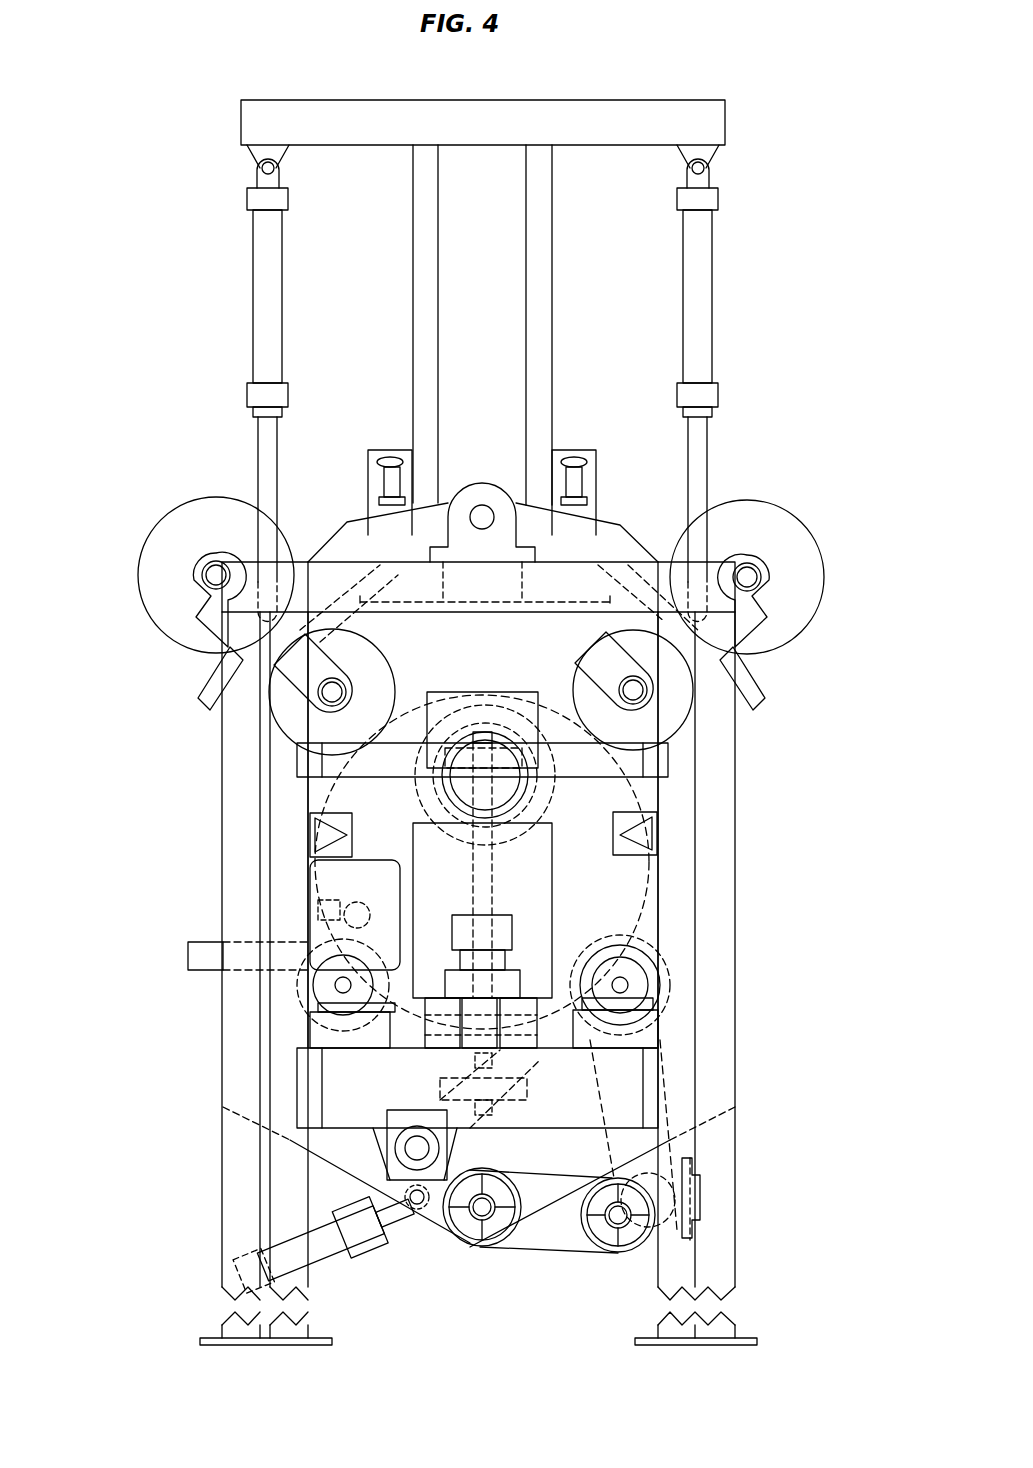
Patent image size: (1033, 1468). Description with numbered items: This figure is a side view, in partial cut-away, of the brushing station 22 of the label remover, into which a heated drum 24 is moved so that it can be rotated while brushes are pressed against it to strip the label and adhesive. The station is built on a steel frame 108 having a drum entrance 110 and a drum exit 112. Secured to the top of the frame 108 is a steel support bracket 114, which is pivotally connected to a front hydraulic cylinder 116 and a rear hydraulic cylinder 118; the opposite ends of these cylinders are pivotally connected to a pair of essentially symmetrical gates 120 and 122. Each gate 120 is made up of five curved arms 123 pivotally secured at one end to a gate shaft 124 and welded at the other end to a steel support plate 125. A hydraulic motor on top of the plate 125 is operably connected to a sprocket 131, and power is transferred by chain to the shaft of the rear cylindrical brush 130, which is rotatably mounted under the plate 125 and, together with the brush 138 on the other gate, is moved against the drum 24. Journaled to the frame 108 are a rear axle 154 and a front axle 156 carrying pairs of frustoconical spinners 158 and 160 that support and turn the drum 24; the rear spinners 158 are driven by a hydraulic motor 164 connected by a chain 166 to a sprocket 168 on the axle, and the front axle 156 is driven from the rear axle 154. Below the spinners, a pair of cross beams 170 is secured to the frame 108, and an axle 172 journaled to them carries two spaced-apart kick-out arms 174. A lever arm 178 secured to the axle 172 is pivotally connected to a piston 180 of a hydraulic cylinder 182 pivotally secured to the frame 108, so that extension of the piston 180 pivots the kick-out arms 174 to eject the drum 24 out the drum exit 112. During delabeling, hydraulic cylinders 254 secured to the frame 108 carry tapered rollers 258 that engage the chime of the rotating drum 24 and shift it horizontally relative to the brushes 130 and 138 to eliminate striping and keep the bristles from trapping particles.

The brushing station 22 is at (242, 48).
The drum 24 is at (638, 885).
The steel frame 108 is at (233, 825).
The drum entrance 110 is at (767, 893).
The drum exit 112 is at (113, 858).
The steel support bracket 114 is at (718, 118).
The front hydraulic cylinder 116 is at (262, 228).
The rear hydraulic cylinder 118 is at (700, 290).
The rear gate 120 is at (778, 716).
The front gate 122 is at (193, 716).
The curved arms 123 is at (752, 670).
The gate shaft 124 is at (482, 515).
The steel support plate 125 is at (745, 706).
The rear cylindrical brush 130 is at (582, 668).
The sprocket 131 is at (780, 525).
The brush 138 is at (385, 660).
The rear axle 154 is at (628, 985).
The front axle 156 is at (335, 985).
The rear spinners 158 is at (640, 952).
The front spinners 160 is at (300, 1000).
The hydraulic motor 164 is at (672, 1202).
The chain 166 is at (660, 1165).
The sprocket 168 is at (618, 1032).
The cross beams 170 is at (637, 1090).
The axle 172 is at (405, 1150).
The kick-out arms 174 is at (447, 1107).
The lever arm 178 is at (425, 1183).
The piston 180 is at (408, 1218).
The hydraulic cylinder 182 is at (325, 1248).
The hydraulic cylinders 254 is at (350, 820).
The tapered rollers 258 is at (350, 842).